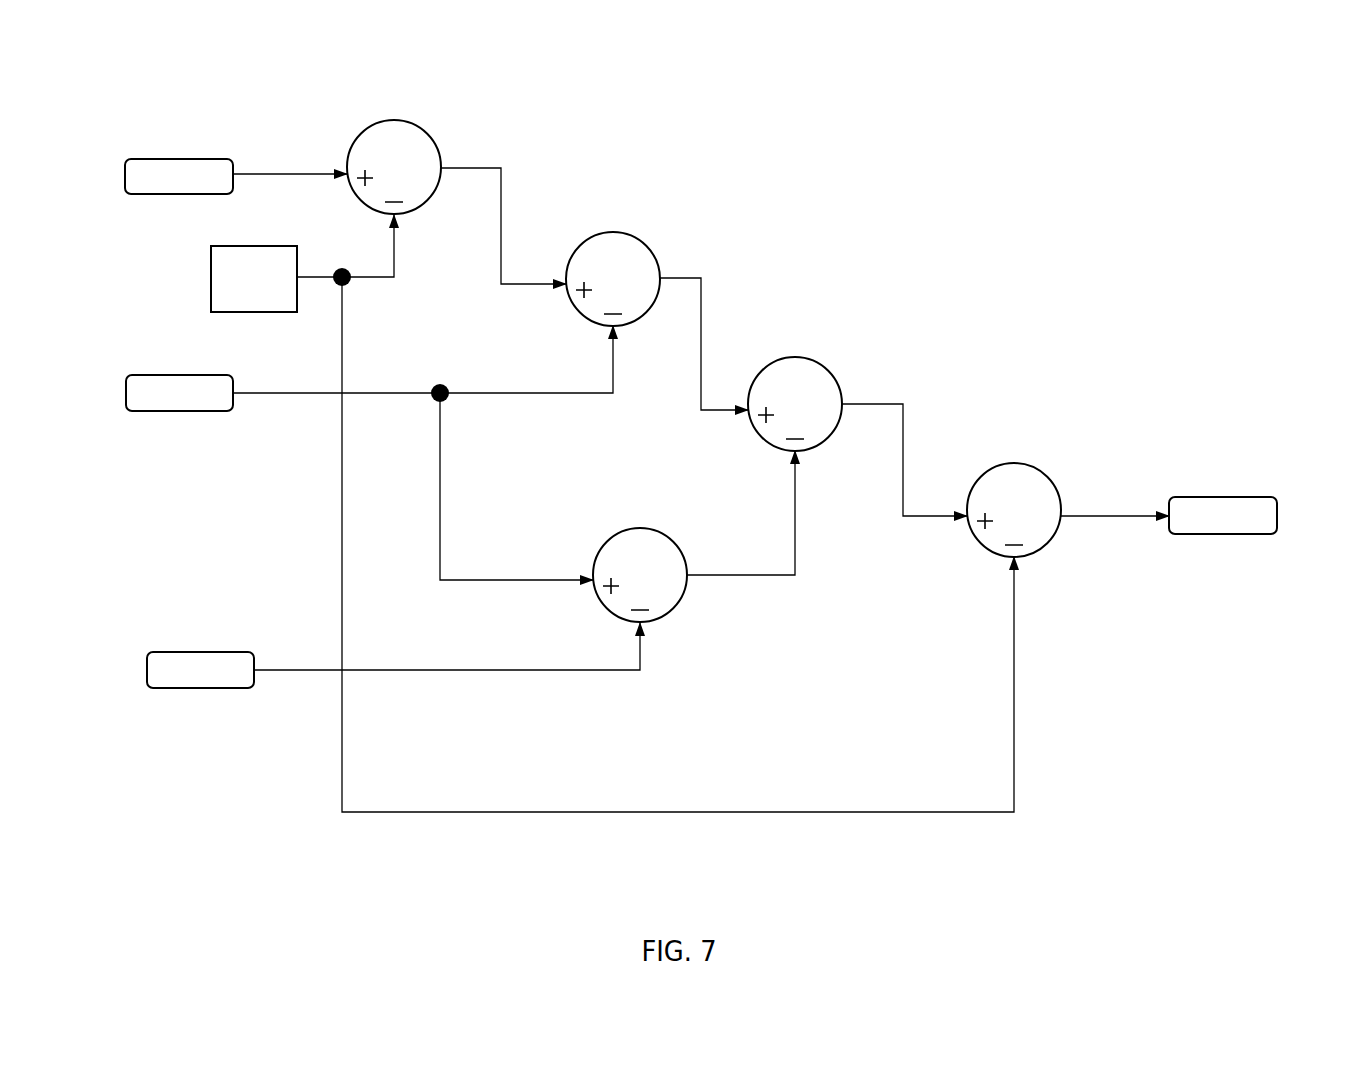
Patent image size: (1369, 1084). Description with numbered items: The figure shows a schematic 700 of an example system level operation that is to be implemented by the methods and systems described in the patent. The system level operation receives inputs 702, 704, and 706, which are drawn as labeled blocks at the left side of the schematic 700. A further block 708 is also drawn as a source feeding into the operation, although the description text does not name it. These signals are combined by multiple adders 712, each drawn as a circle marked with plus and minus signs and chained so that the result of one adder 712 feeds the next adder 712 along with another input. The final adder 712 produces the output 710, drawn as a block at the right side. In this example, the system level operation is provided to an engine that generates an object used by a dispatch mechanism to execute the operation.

The schematic 700 is at (697, 66).
The input 702 is at (161, 190).
The input 704 is at (161, 407).
The input 706 is at (182, 684).
The reference input block 708 is at (236, 291).
The output 710 is at (1205, 532).
The adders 712 is at (428, 134).